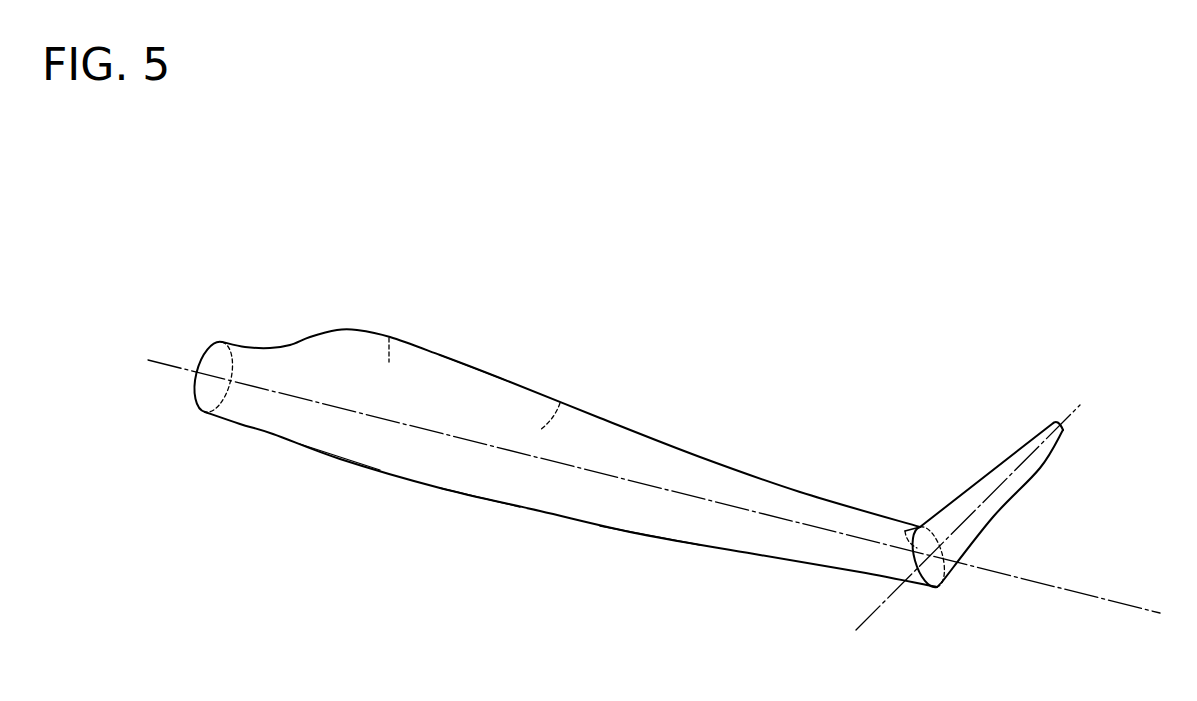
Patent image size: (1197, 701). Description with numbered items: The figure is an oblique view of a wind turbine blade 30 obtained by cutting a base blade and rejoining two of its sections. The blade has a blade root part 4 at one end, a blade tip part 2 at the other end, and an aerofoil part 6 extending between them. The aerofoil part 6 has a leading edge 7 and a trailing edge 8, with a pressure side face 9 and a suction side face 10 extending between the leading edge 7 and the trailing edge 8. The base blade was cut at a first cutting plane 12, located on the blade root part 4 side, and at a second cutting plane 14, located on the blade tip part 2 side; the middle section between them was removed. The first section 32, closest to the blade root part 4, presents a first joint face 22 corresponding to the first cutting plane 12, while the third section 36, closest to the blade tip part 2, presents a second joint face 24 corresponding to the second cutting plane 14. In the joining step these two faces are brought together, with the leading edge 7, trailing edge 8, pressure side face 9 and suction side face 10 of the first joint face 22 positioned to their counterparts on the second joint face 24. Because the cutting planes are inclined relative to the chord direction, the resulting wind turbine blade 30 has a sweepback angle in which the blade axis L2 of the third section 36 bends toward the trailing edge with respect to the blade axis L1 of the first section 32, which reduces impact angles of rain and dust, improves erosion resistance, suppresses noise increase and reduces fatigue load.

The blade tip part 2 is at (1063, 430).
The blade root part 4 is at (227, 410).
The aerofoil part 6 is at (343, 440).
The leading edge 7 is at (478, 500).
The trailing edge 8 is at (475, 367).
The pressure side face 9 is at (391, 333).
The suction side face 10 is at (560, 402).
The first cutting plane 12 is at (939, 584).
The second cutting plane 14 is at (912, 529).
The first joint face 22 is at (935, 588).
The second joint face 24 is at (905, 530).
The wind turbine blade 30 is at (668, 276).
The first section 32 is at (648, 518).
The third section 36 is at (993, 515).
The blade axis of the first section L1 is at (669, 497).
The blade axis of the third section L2 is at (977, 506).